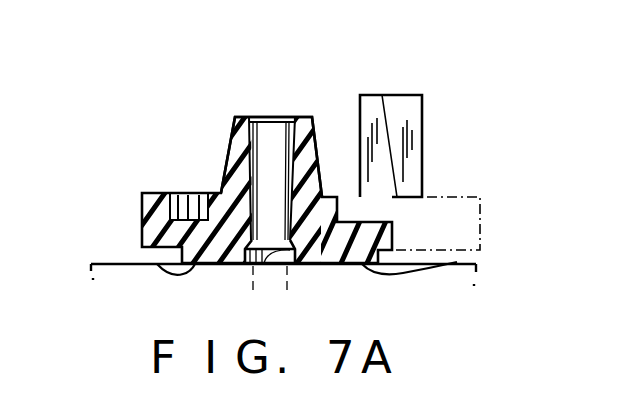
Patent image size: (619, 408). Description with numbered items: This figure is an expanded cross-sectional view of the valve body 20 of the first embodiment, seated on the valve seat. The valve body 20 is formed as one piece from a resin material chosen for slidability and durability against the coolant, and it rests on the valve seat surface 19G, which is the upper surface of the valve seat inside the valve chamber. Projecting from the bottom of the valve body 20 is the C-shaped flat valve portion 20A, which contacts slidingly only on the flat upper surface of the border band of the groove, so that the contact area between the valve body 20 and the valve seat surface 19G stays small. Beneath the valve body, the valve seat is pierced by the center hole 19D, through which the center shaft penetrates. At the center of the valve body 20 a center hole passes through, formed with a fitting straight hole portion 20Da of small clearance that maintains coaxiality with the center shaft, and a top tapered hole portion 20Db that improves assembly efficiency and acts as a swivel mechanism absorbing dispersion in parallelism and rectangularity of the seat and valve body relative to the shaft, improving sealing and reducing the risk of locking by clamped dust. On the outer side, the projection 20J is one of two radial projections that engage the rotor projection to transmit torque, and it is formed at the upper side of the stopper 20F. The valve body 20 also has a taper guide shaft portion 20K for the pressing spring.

The valve body 20 is at (152, 192).
The taper guide shaft portion 20K is at (231, 130).
The center hole 19D is at (268, 236).
The top tapered hole portion 20Db is at (288, 113).
The fitting straight hole portion 20Da is at (297, 255).
The projection 20J is at (403, 120).
The stopper 20F is at (468, 207).
The flat valve portion 20A is at (157, 264).
The valve seat surface 19G is at (125, 263).